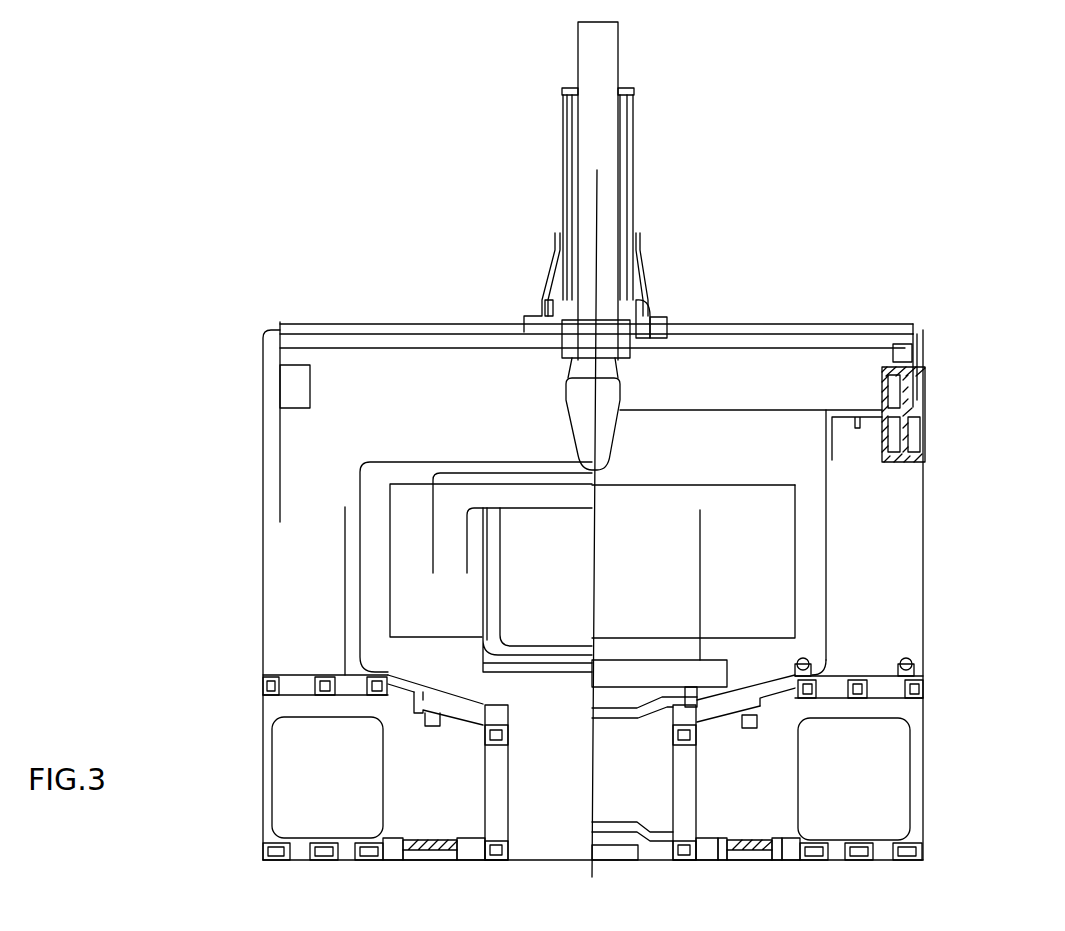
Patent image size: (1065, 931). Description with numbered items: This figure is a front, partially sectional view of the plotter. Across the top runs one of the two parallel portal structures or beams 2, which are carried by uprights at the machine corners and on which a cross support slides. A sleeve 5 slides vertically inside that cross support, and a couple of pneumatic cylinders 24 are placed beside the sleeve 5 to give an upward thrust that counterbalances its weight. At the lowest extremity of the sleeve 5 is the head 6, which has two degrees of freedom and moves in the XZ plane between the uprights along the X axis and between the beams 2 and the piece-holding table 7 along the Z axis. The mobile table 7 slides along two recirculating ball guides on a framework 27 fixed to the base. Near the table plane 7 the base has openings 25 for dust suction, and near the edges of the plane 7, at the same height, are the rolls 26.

The portal structures or beams 2 is at (338, 387).
The sleeve 5 is at (607, 66).
The pneumatic cylinders 24 is at (628, 210).
The head 6 is at (580, 411).
The piece-holding table 7 is at (632, 644).
The openings for dust suction 25 is at (747, 676).
The rolls 26 is at (805, 672).
The framework 27 is at (925, 690).